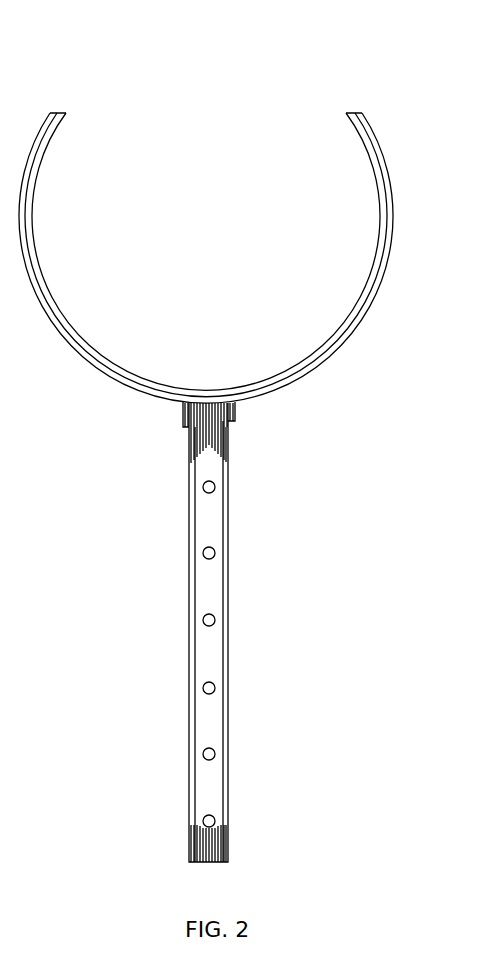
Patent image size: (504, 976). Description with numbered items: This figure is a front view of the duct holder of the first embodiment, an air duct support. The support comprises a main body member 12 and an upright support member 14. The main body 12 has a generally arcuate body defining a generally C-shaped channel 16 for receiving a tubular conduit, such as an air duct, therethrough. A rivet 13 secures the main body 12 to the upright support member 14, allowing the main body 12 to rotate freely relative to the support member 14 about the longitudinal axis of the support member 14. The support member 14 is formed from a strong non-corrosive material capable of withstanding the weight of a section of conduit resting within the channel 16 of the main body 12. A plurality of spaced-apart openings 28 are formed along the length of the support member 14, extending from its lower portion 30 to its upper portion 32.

The main body member 12 is at (397, 217).
The rivet 13 is at (208, 395).
The upright support member 14 is at (242, 618).
The C-shaped channel 16 is at (217, 188).
The spaced-apart openings 28 is at (203, 553).
The lower portion 30 is at (229, 830).
The upper portion 32 is at (228, 455).